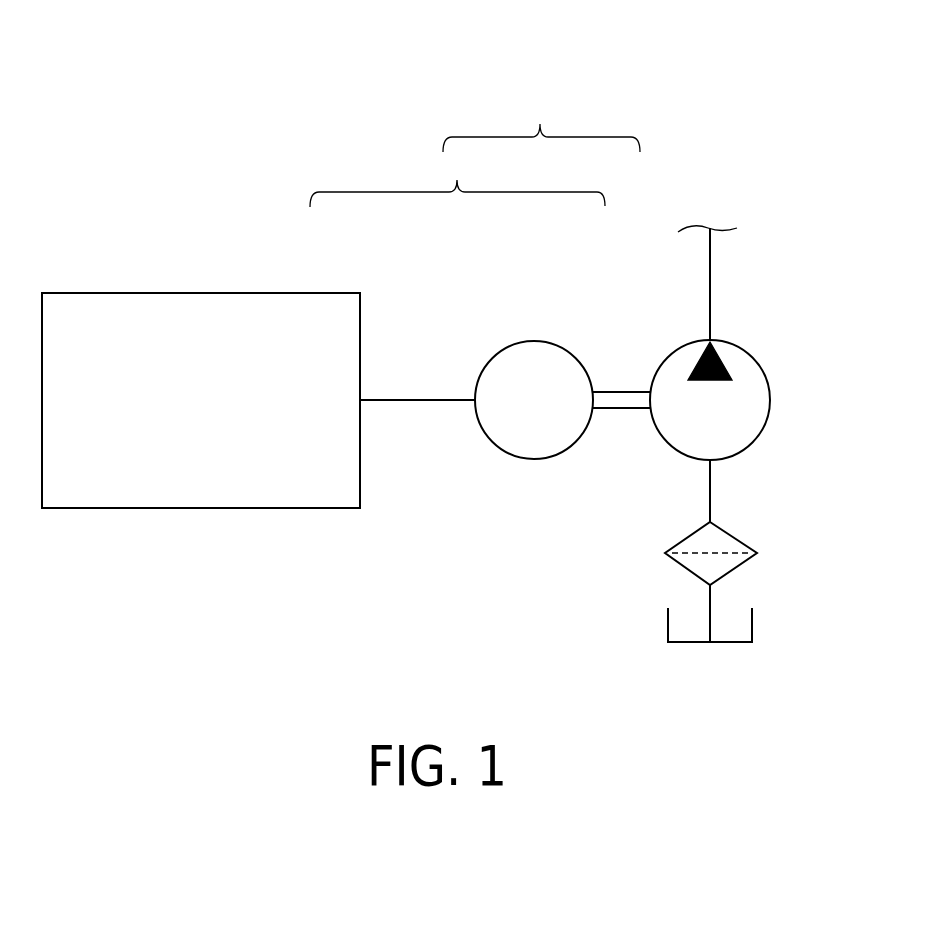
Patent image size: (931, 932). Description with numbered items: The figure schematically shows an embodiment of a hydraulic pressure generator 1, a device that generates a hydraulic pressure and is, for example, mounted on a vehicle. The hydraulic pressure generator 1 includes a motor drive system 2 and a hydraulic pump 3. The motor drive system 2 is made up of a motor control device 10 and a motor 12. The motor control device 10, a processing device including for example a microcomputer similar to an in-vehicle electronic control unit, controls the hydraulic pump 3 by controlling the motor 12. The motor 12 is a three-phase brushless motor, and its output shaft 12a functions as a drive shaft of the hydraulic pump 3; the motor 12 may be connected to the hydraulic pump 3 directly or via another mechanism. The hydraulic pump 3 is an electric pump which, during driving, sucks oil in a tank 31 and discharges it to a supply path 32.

The hydraulic pressure generator 1 is at (533, 112).
The motor drive system 2 is at (457, 177).
The hydraulic pump 3 is at (682, 346).
The motor control device 10 is at (317, 292).
The motor 12 is at (540, 340).
The output shaft 12a is at (613, 392).
The tank 31 is at (753, 622).
The supply path 32 is at (712, 281).